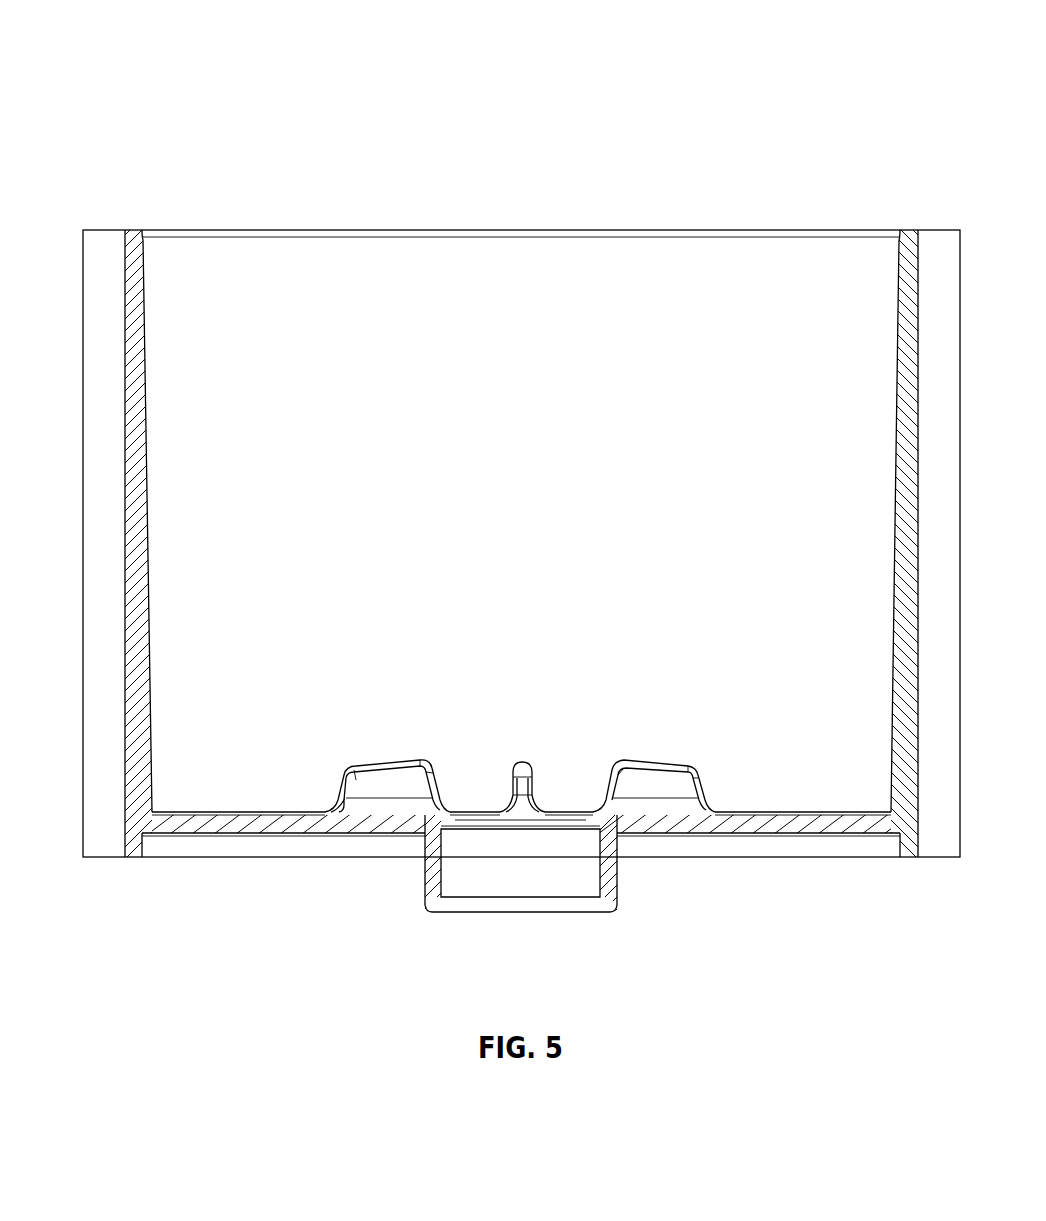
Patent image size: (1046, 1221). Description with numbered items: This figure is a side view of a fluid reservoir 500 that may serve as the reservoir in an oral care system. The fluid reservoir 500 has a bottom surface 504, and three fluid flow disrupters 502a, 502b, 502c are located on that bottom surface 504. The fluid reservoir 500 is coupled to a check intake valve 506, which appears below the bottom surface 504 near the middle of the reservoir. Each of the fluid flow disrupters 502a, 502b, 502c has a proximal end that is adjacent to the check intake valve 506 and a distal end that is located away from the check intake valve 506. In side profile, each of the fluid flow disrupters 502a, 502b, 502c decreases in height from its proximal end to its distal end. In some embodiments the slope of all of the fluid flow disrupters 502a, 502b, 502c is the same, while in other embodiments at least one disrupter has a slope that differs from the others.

The fluid reservoir 500 is at (130, 114).
The fluid flow disrupter 502a is at (385, 762).
The fluid flow disrupter 502b is at (517, 762).
The fluid flow disrupter 502c is at (651, 760).
The bottom surface 504 is at (270, 812).
The check intake valve 506 is at (521, 912).